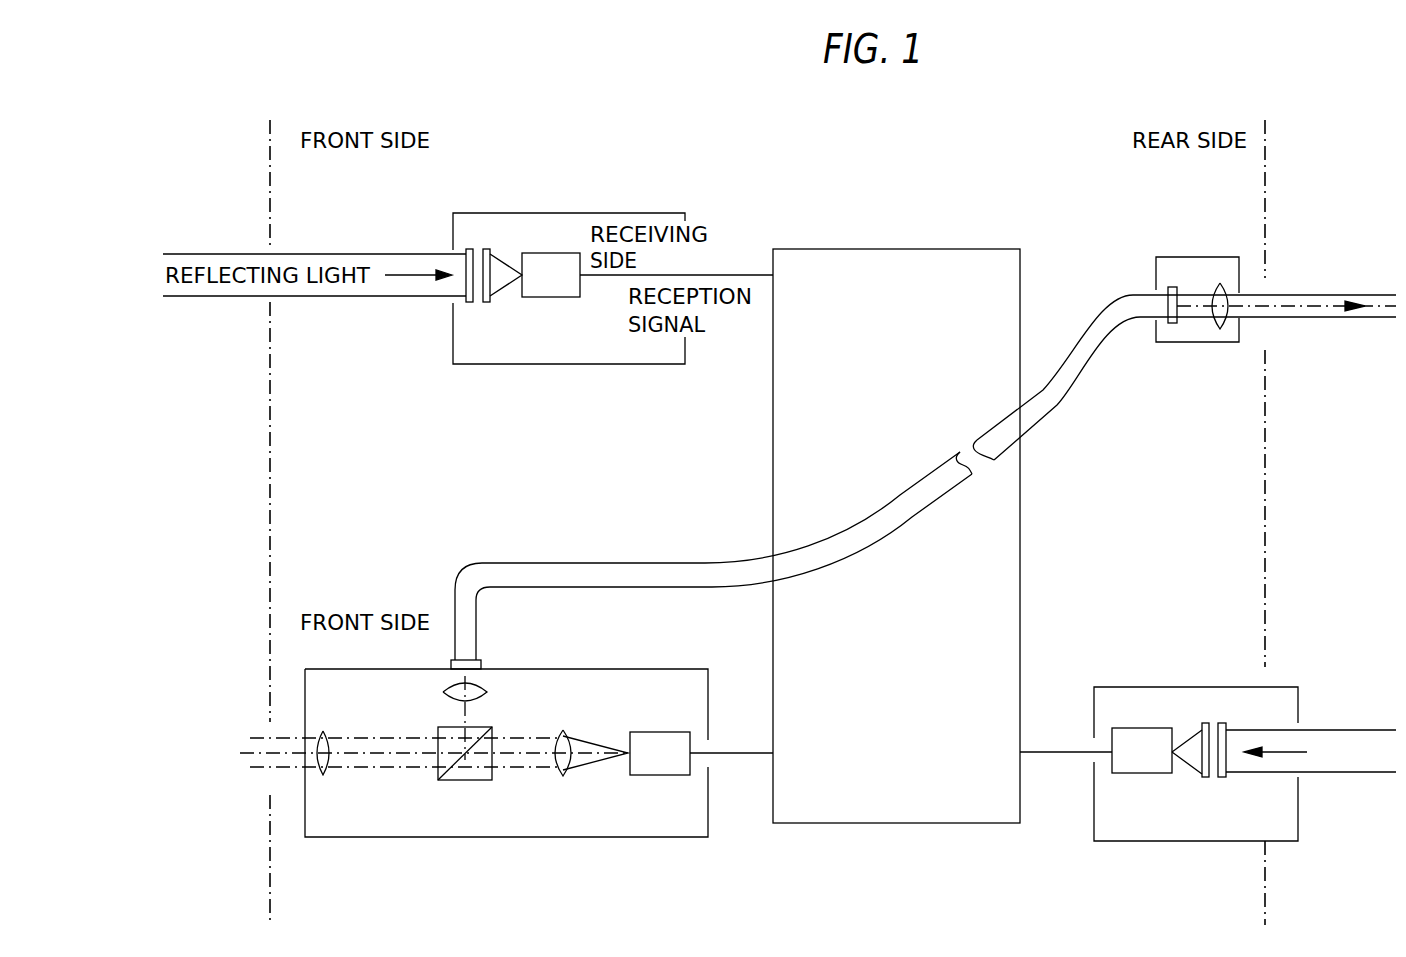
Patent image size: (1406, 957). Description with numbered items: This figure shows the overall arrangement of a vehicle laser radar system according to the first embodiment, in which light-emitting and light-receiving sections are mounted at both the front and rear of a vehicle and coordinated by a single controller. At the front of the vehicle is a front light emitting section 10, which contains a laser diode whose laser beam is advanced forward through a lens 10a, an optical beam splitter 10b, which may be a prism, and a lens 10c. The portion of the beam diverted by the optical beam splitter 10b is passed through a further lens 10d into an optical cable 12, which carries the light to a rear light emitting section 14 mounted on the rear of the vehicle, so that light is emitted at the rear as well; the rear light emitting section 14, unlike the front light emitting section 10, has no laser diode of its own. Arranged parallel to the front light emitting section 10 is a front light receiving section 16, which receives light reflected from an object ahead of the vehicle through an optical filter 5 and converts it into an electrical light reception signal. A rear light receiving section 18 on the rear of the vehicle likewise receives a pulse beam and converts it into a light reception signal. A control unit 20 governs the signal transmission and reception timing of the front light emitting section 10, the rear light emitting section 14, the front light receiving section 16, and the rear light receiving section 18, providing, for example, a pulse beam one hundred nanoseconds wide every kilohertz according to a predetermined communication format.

The optical filter 5 is at (493, 250).
The front light emitting section 10 is at (474, 730).
The lens 10a is at (568, 733).
The optical beam splitter 10b is at (492, 727).
The lens 10c is at (327, 735).
The lens 10d is at (490, 692).
The optical cable 12 is at (1053, 413).
The rear light emitting section 14 is at (1175, 342).
The front light receiving section 16 is at (569, 254).
The rear light receiving section 18 is at (1153, 687).
The control unit 20 is at (930, 823).